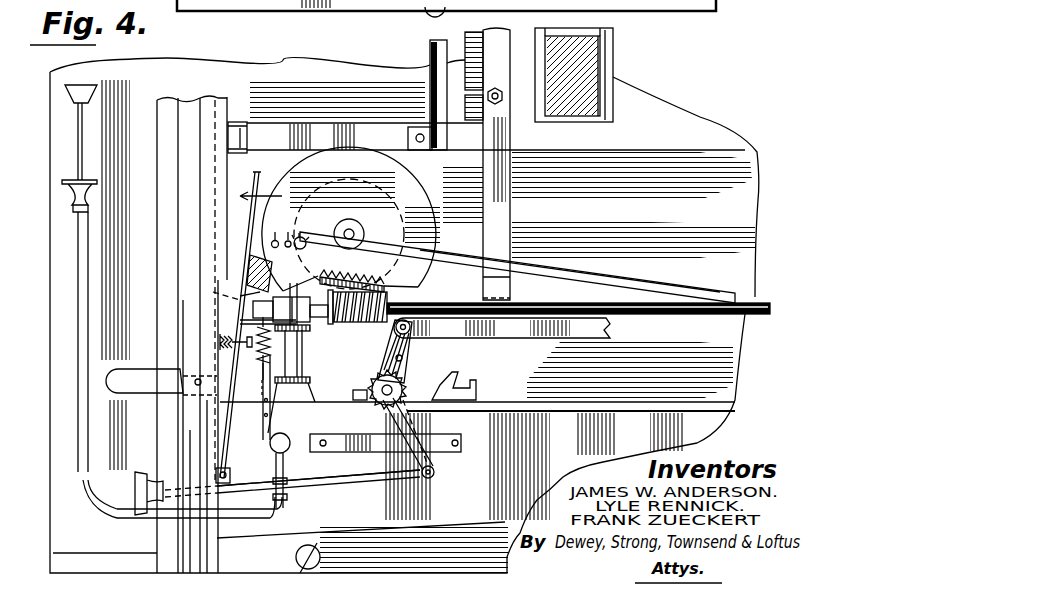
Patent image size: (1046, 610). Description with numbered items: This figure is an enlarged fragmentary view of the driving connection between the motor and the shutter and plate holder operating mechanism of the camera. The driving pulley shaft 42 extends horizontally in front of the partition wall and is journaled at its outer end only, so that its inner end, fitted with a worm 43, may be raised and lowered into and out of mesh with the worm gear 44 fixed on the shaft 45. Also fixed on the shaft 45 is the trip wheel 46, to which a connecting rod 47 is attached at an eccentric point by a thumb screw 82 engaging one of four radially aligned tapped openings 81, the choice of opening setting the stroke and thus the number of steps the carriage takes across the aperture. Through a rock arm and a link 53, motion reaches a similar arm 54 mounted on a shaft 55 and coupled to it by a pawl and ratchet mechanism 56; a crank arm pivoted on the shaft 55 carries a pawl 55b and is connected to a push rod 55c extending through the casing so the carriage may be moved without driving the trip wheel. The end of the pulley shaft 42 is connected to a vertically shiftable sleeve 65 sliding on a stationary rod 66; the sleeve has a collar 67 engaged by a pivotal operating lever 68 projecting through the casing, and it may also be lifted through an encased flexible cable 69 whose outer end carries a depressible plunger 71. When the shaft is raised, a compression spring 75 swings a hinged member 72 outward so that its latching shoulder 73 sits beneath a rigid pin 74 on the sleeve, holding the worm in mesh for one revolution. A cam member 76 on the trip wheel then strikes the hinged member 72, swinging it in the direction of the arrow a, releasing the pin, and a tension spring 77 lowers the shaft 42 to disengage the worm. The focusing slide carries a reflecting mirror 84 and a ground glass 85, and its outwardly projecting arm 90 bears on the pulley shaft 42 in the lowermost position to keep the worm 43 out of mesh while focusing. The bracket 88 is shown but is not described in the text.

The shaft 42 is at (445, 305).
The worm 43 is at (357, 316).
The worm gear 44 is at (334, 275).
The shaft 45 is at (347, 228).
The trip wheel 46 is at (430, 212).
The connecting rod 47 is at (450, 259).
The link 53 is at (513, 332).
The arm 54 is at (410, 347).
The shaft 55 is at (375, 390).
The pawl 55b is at (407, 407).
The push rod 55c is at (318, 488).
The pawl and ratchet mechanism 56 is at (402, 382).
The sleeve 65 is at (300, 347).
The rod 66 is at (290, 424).
The collar 67 is at (308, 384).
The operating lever 68 is at (127, 375).
The flexible cable 69 is at (83, 297).
The plunger 71 is at (88, 93).
The hinged member 72 is at (258, 181).
The latching shoulder 73 is at (223, 292).
The rigid pin 74 is at (240, 322).
The compression spring 75 is at (220, 342).
The cam member 76 is at (250, 266).
The tension spring 77 is at (254, 357).
The tapped openings 81 is at (272, 242).
The thumb screw 82 is at (513, 267).
The reflecting mirror 84 is at (574, 75).
The ground glass 85 is at (437, 48).
The bracket 88 is at (272, 135).
The arm 90 is at (503, 138).
The arrow a is at (266, 196).